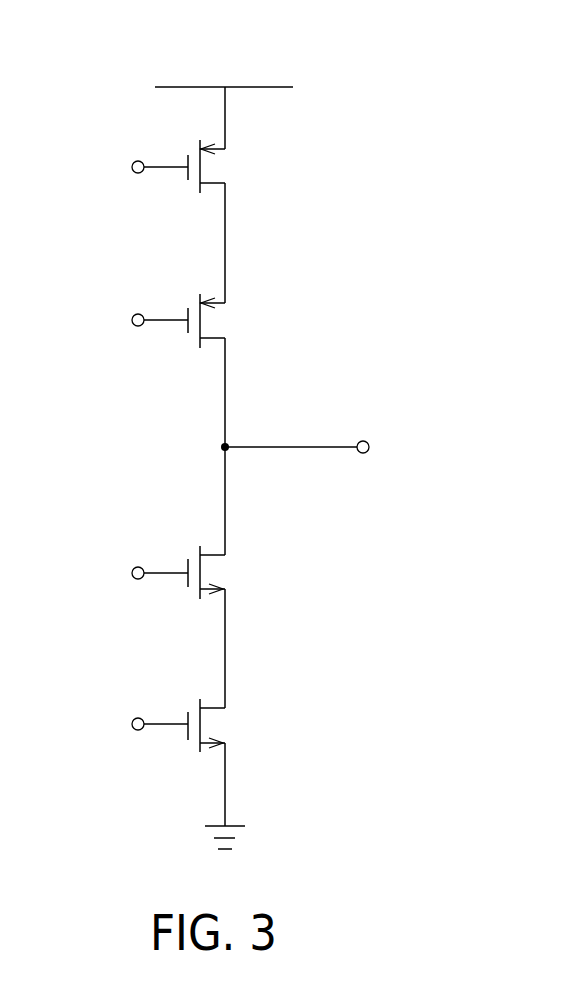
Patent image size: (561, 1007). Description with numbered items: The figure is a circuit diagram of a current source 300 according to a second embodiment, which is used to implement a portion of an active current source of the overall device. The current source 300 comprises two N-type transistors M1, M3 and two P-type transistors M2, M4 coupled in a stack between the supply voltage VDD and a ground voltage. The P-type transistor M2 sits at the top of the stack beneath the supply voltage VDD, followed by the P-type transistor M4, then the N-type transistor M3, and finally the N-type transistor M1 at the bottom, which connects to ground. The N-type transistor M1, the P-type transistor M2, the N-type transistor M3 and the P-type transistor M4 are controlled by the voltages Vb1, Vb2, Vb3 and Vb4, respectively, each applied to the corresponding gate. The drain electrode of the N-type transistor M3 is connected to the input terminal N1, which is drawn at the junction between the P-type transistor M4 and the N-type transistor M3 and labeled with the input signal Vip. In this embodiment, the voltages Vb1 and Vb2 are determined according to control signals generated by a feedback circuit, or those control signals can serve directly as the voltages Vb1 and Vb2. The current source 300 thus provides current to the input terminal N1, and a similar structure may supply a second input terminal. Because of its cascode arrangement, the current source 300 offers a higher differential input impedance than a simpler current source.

The current source 300 is at (410, 88).
The supply voltage VDD is at (224, 69).
The P-type transistor M2 is at (230, 166).
The P-type transistor M4 is at (230, 321).
The N-type transistor M3 is at (231, 572).
The N-type transistor M1 is at (231, 725).
The voltage Vb2 is at (130, 165).
The voltage Vb4 is at (130, 317).
The voltage Vb3 is at (130, 569).
The voltage Vb1 is at (130, 723).
The input terminal N1 is at (206, 448).
The input voltage Vip is at (322, 448).